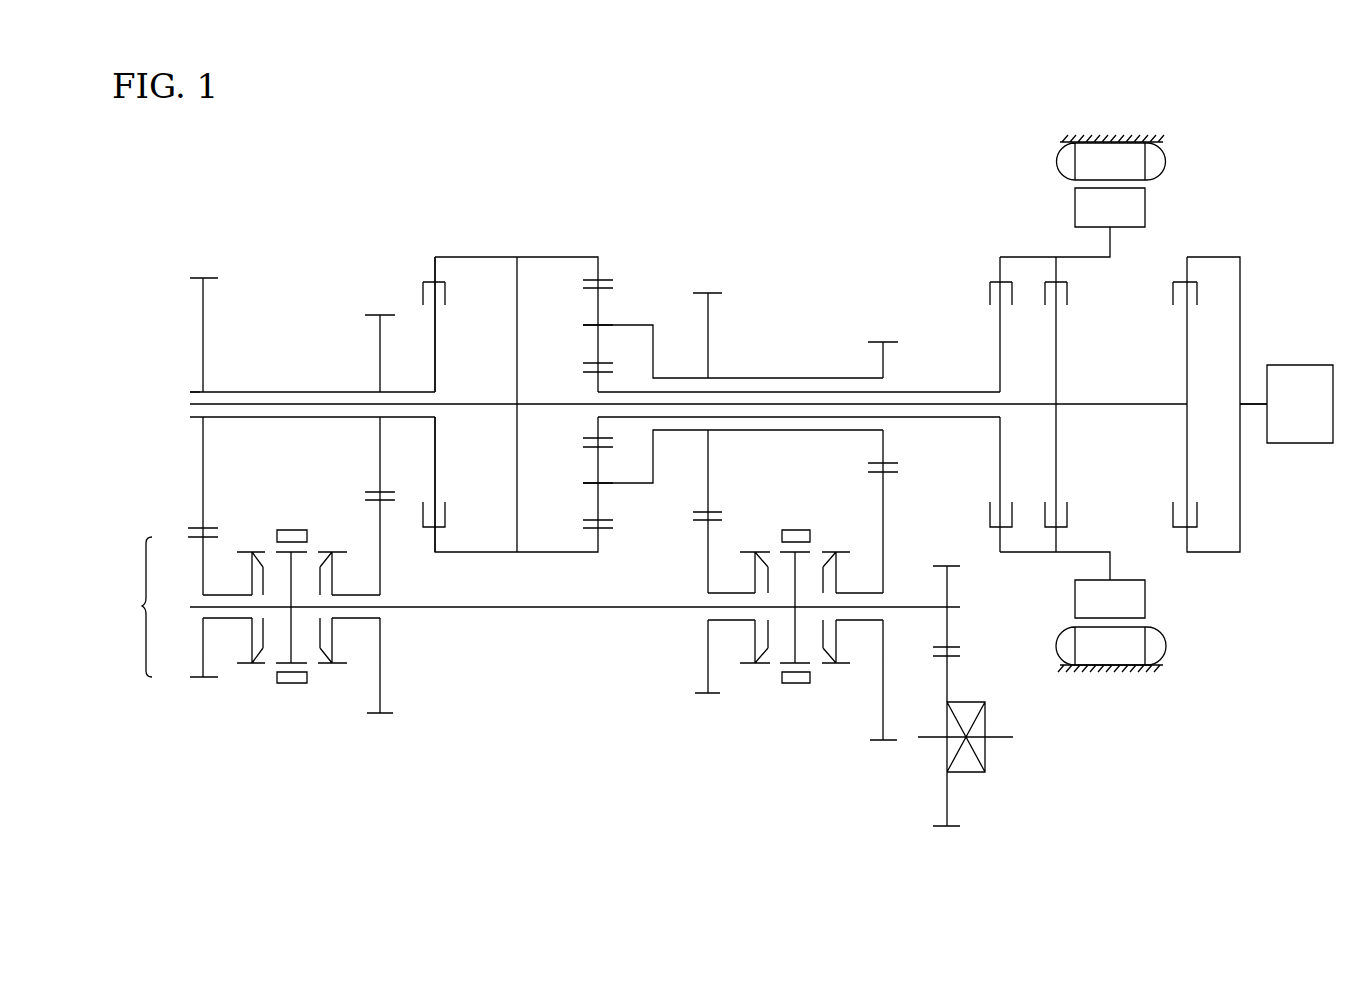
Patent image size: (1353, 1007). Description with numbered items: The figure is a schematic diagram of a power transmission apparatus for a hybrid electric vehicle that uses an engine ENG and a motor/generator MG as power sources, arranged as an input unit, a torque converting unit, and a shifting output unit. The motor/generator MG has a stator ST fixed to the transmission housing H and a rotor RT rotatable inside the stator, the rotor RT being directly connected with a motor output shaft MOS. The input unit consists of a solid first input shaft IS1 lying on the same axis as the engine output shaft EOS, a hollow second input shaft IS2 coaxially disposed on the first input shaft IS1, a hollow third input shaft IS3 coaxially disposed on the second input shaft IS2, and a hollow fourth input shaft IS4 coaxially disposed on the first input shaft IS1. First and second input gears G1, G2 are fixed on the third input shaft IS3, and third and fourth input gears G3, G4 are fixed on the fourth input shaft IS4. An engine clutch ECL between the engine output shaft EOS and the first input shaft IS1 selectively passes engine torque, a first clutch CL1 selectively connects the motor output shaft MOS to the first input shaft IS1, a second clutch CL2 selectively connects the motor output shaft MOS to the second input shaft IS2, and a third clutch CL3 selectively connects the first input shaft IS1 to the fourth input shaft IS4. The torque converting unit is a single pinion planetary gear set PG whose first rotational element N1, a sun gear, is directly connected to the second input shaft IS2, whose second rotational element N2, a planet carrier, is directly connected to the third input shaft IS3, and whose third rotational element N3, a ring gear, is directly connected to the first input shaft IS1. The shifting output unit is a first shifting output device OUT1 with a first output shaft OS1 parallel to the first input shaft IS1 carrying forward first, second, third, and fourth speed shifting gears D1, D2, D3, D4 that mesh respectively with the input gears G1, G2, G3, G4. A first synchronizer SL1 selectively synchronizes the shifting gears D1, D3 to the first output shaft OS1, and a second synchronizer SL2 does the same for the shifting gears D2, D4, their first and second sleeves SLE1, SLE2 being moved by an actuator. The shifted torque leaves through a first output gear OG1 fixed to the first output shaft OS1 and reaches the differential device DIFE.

The first input shaft IS1 is at (955, 402).
The second input shaft IS2 is at (932, 420).
The third input shaft IS3 is at (797, 432).
The fourth input shaft IS4 is at (410, 418).
The first output shaft OS1 is at (551, 608).
The planetary gear set PG is at (626, 287).
The third rotational element N3 is at (607, 274).
The second rotational element N2 is at (590, 325).
The first rotational element N1 is at (592, 372).
The fourth input gear G4 is at (209, 276).
The third input gear G3 is at (373, 313).
The second input gear G2 is at (700, 293).
The first input gear G1 is at (876, 342).
The forward fourth speed shifting gear D4 is at (203, 652).
The forward third speed shifting gear D3 is at (708, 662).
The forward second speed shifting gear D2 is at (380, 661).
The forward first speed shifting gear D1 is at (884, 704).
The first synchronizer SL1 is at (767, 704).
The second synchronizer SL2 is at (330, 696).
The first sleeve SLE1 is at (800, 686).
The second sleeve SLE2 is at (288, 686).
The first shifting output device OUT1 is at (123, 607).
The first output gear OG1 is at (950, 593).
The differential device DIFE is at (990, 754).
The first clutch CL1 is at (1042, 270).
The second clutch CL2 is at (979, 270).
The third clutch CL3 is at (428, 264).
The motor output shaft MOS is at (1095, 257).
The engine clutch ECL is at (1224, 285).
The engine output shaft EOS is at (1248, 389).
The engine ENG is at (1300, 404).
The motor/generator MG is at (1139, 383).
The stator ST is at (1111, 404).
The rotor RT is at (1110, 403).
The transmission housing H is at (1130, 140).